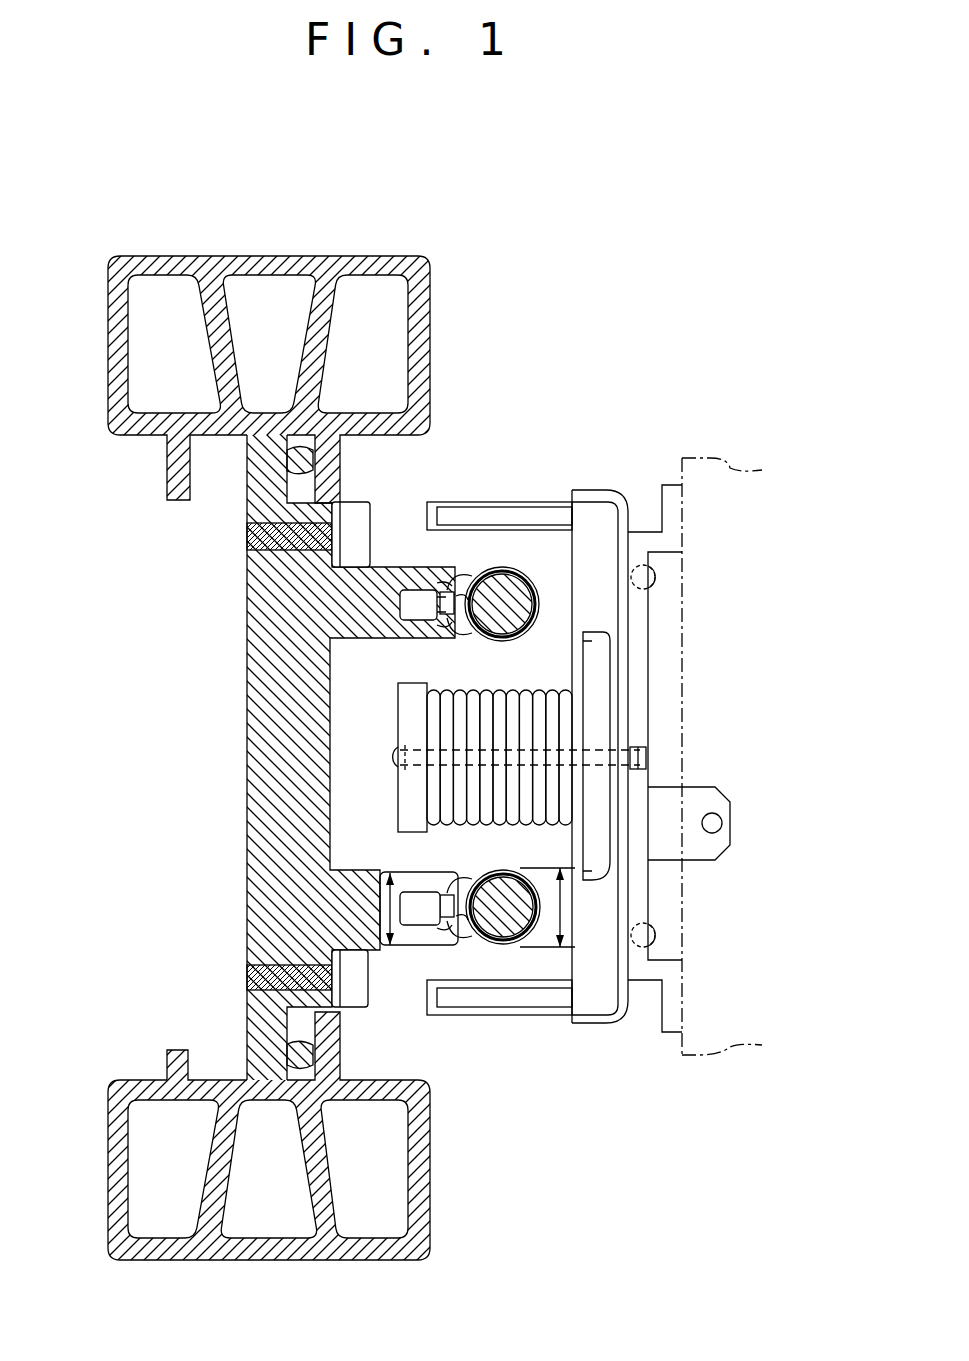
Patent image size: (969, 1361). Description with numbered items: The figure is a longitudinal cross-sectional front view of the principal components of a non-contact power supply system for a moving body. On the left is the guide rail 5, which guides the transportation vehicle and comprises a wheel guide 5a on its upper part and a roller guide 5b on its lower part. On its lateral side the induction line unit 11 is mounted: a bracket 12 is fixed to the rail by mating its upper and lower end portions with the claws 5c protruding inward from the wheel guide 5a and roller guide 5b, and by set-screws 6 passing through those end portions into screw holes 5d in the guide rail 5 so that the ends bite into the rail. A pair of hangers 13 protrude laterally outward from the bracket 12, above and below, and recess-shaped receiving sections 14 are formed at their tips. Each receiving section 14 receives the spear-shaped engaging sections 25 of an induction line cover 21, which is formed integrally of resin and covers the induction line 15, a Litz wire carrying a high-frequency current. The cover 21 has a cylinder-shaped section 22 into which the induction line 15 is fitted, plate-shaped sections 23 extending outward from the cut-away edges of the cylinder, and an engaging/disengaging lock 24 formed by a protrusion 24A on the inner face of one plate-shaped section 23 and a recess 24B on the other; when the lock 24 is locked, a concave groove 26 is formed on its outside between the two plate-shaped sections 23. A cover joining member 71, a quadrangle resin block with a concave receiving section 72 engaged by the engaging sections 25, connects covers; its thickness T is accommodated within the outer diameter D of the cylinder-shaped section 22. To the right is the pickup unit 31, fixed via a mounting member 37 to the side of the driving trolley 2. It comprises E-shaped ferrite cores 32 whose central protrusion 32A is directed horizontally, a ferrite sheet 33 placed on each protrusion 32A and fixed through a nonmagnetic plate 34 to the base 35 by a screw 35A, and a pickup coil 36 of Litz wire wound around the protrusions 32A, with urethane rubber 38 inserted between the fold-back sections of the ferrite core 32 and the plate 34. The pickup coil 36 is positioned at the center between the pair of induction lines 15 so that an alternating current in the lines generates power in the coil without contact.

The driving trolley 2 is at (681, 703).
The guide rail 5 is at (233, 704).
The wheel guide 5a is at (265, 262).
The roller guide 5b is at (108, 1165).
The claw 5c is at (318, 462).
The screw hole 5d is at (244, 534).
The set-screw 6 is at (371, 522).
The induction line unit 11 is at (383, 1000).
The bracket 12 is at (300, 737).
The hanger 13 is at (425, 604).
The receiving section 14 is at (418, 590).
The induction line 15 is at (503, 590).
The induction line cover 21 is at (615, 738).
The cylinder-shaped section 22 is at (542, 612).
The plate-shaped section 23 is at (462, 637).
The engaging/disengaging lock 24 is at (467, 675).
The protrusion 24A is at (452, 595).
The recess 24B is at (428, 590).
The engaging section 25 is at (434, 626).
The concave groove 26 is at (432, 585).
The pickup unit 31 is at (615, 444).
The ferrite core 32 is at (480, 719).
The protrusion 32A is at (588, 750).
The ferrite sheet 33 is at (408, 706).
The nonmagnetic plate 34 is at (605, 652).
The base 35 is at (619, 495).
The screw 35A is at (395, 762).
The pickup coil 36 is at (545, 790).
The mounting member 37 is at (672, 538).
The urethane rubber 38 is at (597, 558).
The cover joining member 71 is at (474, 864).
The receiving section 72 is at (411, 874).
The thickness T is at (388, 907).
The outer diameter D is at (562, 908).